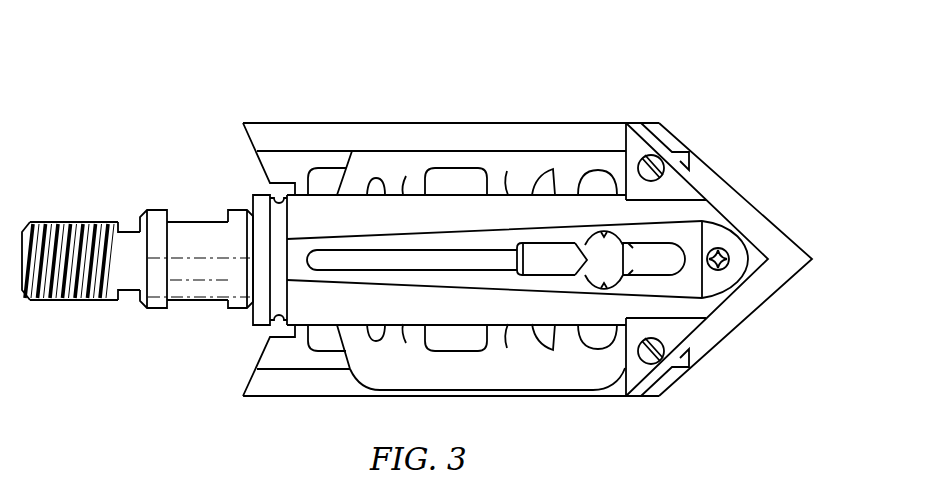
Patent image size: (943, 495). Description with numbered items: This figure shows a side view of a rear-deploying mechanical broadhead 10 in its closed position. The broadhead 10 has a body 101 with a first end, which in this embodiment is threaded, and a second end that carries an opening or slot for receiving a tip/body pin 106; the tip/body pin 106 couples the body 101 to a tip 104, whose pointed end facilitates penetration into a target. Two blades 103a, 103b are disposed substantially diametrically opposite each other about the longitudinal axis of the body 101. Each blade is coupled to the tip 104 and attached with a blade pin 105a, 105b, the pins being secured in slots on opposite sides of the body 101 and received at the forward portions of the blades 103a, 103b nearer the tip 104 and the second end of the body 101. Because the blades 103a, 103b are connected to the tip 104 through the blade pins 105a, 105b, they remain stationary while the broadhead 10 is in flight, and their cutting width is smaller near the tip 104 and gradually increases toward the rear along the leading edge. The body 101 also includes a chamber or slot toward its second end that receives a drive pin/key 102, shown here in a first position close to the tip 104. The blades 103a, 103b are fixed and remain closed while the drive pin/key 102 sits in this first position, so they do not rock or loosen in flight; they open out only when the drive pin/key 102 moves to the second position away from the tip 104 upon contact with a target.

The rear-deploying mechanical broadhead 10 is at (168, 76).
The body 101 is at (72, 300).
The drive pin/key 102 is at (653, 270).
The blade 103a is at (433, 133).
The blade 103b is at (433, 383).
The tip 104 is at (773, 238).
The blade pin 105a is at (655, 158).
The blade pin 105b is at (656, 360).
The tip/body pin 106 is at (728, 268).